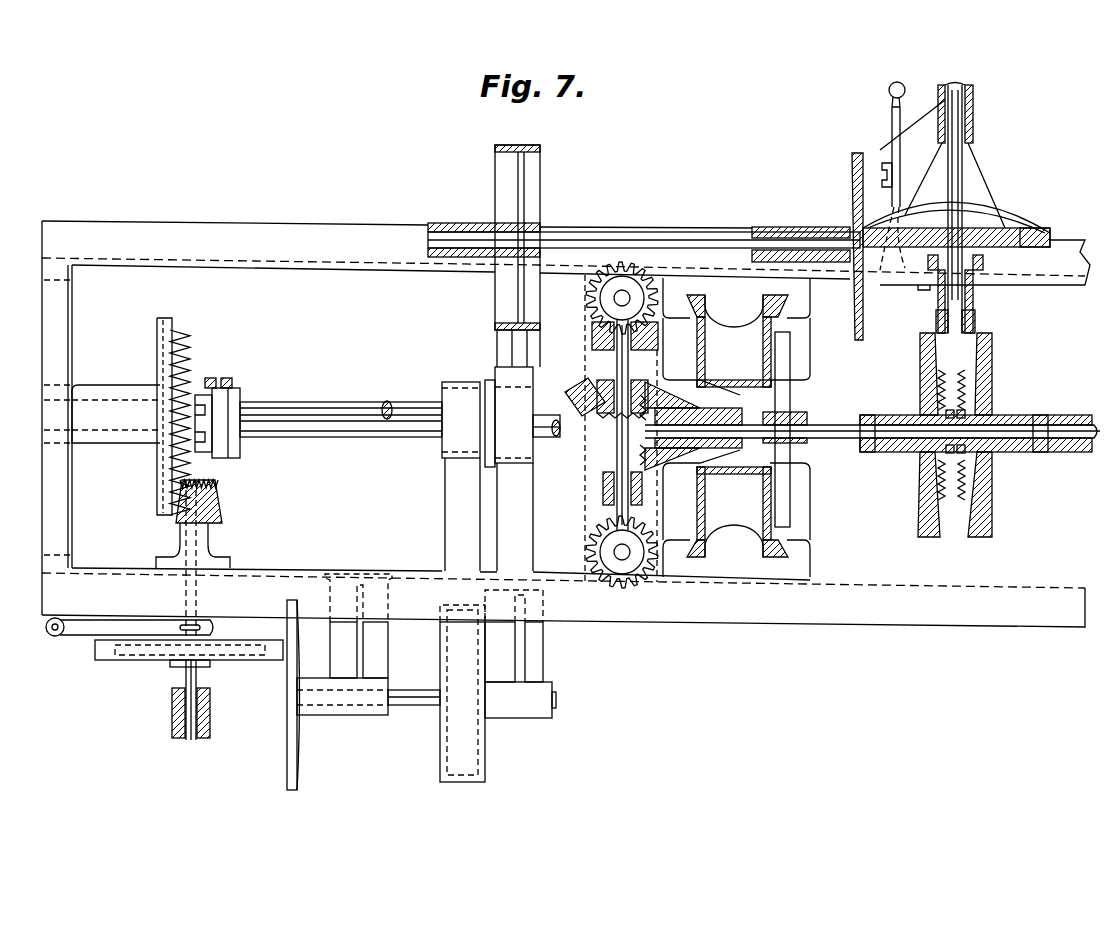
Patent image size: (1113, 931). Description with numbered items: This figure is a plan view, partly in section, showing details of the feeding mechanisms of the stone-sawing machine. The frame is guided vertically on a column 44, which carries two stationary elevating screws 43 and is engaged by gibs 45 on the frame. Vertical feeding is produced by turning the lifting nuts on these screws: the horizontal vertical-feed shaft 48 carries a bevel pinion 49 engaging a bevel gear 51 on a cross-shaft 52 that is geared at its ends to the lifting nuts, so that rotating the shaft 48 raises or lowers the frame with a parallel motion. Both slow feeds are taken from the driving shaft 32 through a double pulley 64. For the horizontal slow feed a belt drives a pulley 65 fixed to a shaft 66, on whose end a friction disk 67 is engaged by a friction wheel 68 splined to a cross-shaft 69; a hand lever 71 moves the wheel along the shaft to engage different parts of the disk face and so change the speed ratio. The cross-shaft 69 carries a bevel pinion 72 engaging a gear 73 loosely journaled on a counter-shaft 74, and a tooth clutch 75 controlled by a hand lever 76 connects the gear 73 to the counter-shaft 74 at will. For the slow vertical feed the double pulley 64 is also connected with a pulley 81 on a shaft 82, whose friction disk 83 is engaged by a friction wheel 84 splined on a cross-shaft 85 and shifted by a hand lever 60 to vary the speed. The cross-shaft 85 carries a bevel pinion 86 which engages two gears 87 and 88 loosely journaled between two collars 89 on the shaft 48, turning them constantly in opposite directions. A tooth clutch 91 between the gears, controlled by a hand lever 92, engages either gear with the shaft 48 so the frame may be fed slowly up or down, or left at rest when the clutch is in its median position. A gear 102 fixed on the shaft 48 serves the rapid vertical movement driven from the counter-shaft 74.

The driving shaft 32 is at (418, 440).
The elevating screws 43 is at (614, 298).
The column 44 is at (705, 350).
The gibs 45 is at (676, 318).
The horizontal shaft 48 is at (852, 440).
The bevel pinion 49 is at (690, 408).
The bevel gear 51 is at (582, 380).
The cross-shaft 52 is at (615, 440).
The hand lever 60 is at (890, 118).
The double pulley 64 is at (440, 386).
The pulley 65 is at (486, 758).
The shaft 66 is at (418, 708).
The friction disk 67 is at (286, 760).
The friction wheel 68 is at (258, 662).
The cross-shaft 69 is at (172, 680).
The hand lever 71 is at (85, 632).
The bevel pinion 72 is at (222, 500).
The gear 73 is at (150, 492).
The counter-shaft 74 is at (338, 440).
The tooth clutch 75 is at (242, 390).
The hand lever 76 is at (212, 377).
The pulley 81 is at (494, 190).
The shaft 82 is at (565, 232).
The friction disk 83 is at (868, 150).
The friction wheel 84 is at (1025, 218).
The cross-shaft 85 is at (970, 165).
The bevel pinion 86 is at (978, 322).
The gear 87 is at (920, 350).
The gear 88 is at (994, 358).
The collars 89 is at (868, 414).
The tooth clutch 91 is at (968, 452).
The hand lever 92 is at (958, 462).
The gear 102 is at (792, 392).